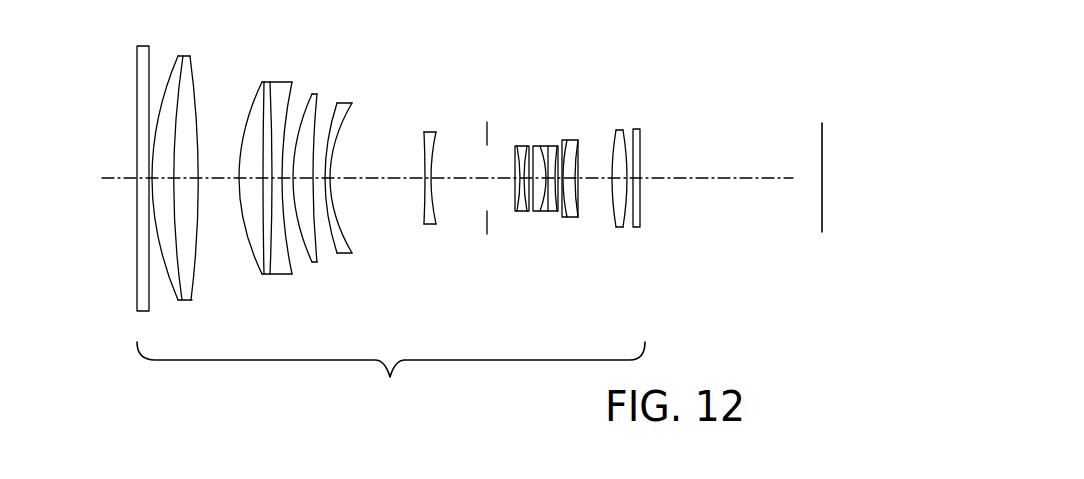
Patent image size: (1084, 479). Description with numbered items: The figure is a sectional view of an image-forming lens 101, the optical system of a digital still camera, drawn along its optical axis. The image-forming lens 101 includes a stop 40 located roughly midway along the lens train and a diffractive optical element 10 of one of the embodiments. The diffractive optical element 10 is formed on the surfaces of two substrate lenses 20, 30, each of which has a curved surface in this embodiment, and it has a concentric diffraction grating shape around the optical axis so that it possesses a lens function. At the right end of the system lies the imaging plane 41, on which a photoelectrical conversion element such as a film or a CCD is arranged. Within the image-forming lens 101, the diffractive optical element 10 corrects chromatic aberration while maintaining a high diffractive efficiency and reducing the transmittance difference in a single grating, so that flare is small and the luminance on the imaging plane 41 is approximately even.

The diffractive optical element 10 is at (197, 177).
The substrate lens 20 is at (175, 80).
The substrate lens 30 is at (185, 82).
The stop 40 is at (488, 128).
The imaging plane 41 is at (822, 140).
The image-forming lens 101 is at (391, 210).